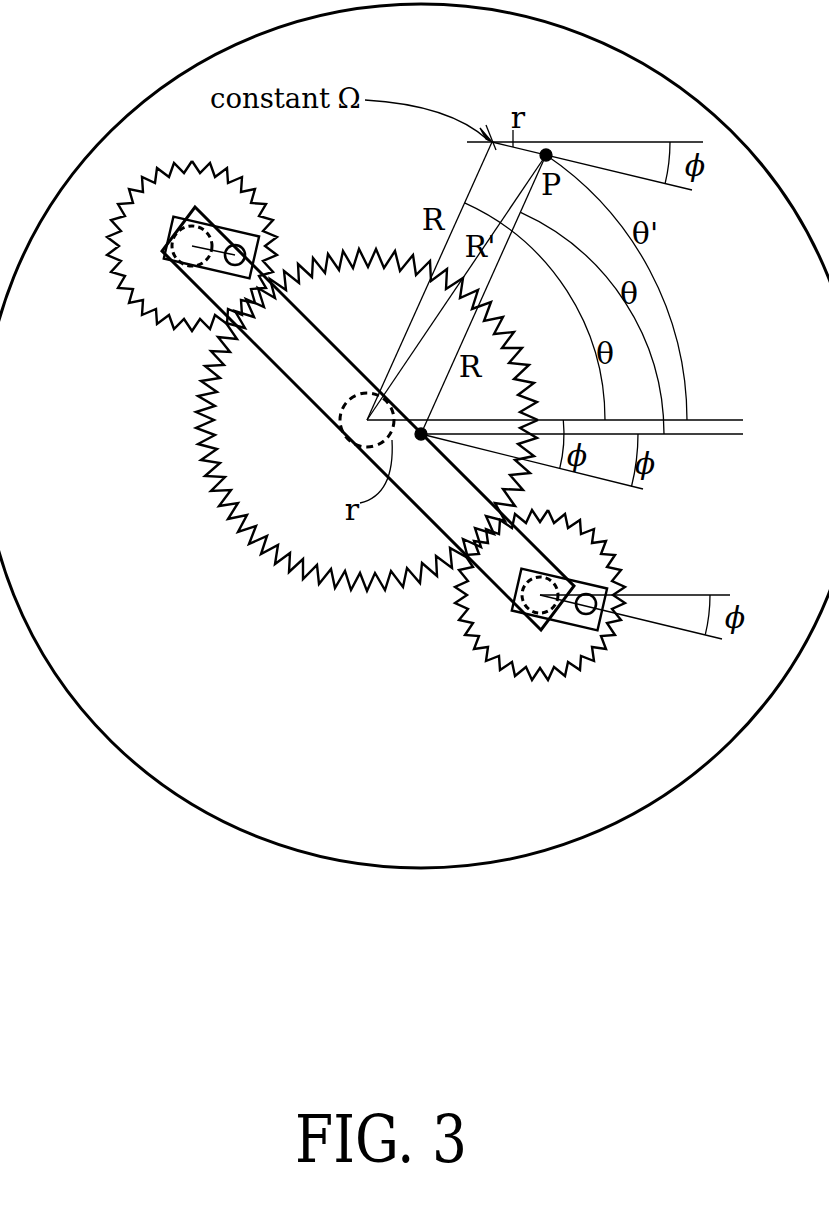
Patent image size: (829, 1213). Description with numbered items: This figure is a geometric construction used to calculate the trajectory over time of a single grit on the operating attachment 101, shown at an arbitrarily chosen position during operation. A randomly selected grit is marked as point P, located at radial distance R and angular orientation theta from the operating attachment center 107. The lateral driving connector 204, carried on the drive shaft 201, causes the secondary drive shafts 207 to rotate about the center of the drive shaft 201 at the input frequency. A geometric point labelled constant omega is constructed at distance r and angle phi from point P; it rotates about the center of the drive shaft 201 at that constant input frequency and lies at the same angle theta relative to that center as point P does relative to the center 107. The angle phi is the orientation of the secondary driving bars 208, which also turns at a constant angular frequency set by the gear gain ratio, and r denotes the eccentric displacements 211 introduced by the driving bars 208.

The operating attachment 101 is at (269, 741).
The operating attachment center 107 is at (400, 432).
The drive shaft 201 is at (348, 432).
The lateral driving connector 204 is at (303, 357).
The secondary drive shafts 207 is at (188, 247).
The secondary driving bars 208 is at (218, 268).
The eccentric displacements 211 is at (565, 605).